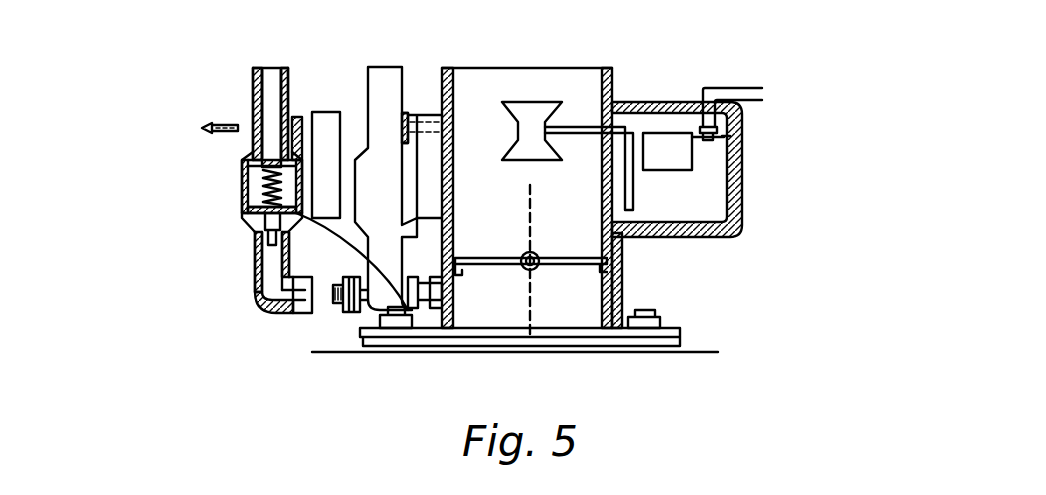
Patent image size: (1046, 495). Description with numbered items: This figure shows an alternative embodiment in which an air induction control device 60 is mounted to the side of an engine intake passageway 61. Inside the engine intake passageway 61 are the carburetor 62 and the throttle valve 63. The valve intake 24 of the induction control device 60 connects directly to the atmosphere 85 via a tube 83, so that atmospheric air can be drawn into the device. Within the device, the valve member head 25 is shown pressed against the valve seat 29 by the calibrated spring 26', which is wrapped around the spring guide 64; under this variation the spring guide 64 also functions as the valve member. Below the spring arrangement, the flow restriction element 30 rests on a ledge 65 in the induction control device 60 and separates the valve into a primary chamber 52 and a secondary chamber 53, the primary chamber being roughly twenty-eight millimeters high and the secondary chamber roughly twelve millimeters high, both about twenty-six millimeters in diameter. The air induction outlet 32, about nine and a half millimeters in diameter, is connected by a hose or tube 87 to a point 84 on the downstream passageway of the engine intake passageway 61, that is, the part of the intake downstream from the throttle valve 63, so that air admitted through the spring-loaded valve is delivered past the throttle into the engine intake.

The air induction control device 60 is at (112, 73).
The atmosphere 85 is at (268, 66).
The tube 83 is at (252, 86).
The valve intake 24 is at (272, 147).
The valve seat 29 is at (277, 162).
The spring guide 64 is at (270, 187).
The spring 26' is at (190, 192).
The valve member head 25 is at (292, 187).
The primary chamber 52 is at (300, 148).
The flow restriction element 30 is at (258, 216).
The secondary chamber 53 is at (268, 233).
The valve outlet 32 is at (253, 264).
The tube 87 is at (256, 284).
The point on the downstream passageway 84 is at (307, 294).
The ledge 65 is at (410, 312).
The engine intake passageway 61 is at (553, 200).
The carburetor 62 is at (545, 104).
The throttle valve 63 is at (590, 268).